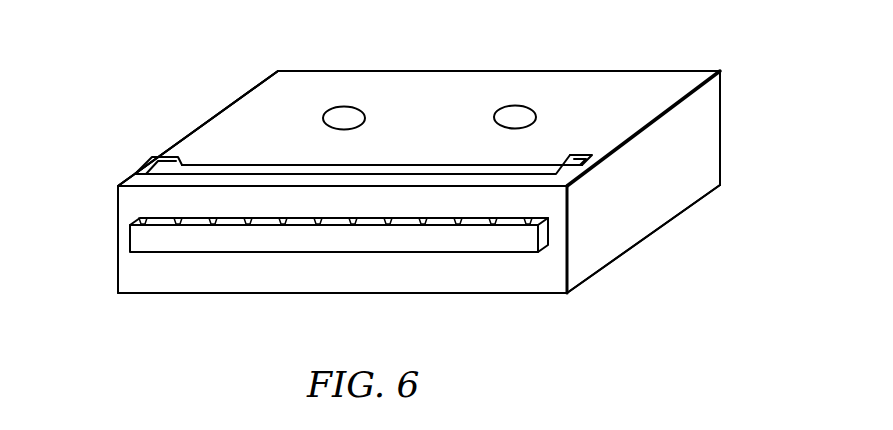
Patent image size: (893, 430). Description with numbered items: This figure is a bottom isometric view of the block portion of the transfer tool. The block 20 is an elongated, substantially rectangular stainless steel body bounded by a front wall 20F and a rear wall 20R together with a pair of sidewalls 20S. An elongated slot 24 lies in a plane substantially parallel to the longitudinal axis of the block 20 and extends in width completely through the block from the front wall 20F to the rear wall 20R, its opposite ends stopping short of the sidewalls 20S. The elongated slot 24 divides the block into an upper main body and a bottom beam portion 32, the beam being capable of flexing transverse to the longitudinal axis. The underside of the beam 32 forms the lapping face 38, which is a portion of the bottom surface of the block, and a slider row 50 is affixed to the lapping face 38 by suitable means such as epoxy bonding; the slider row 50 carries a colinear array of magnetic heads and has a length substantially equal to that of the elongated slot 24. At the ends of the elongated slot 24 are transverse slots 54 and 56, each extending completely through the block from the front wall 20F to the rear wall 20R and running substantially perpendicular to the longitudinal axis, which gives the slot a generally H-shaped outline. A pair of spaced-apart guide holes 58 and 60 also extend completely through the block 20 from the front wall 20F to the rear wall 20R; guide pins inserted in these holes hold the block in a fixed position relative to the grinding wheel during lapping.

The block 20 is at (425, 140).
The front wall 20F is at (595, 92).
The sidewalls 20S is at (240, 97).
The rear wall 20R is at (668, 178).
The elongated slot 24 is at (205, 166).
The bottom beam portion 32 is at (340, 178).
The lapping face 38 is at (227, 272).
The slider row 50 is at (167, 240).
The transverse slot 54 is at (163, 162).
The transverse slot 56 is at (577, 173).
The guide hole 58 is at (346, 117).
The guide hole 60 is at (515, 115).